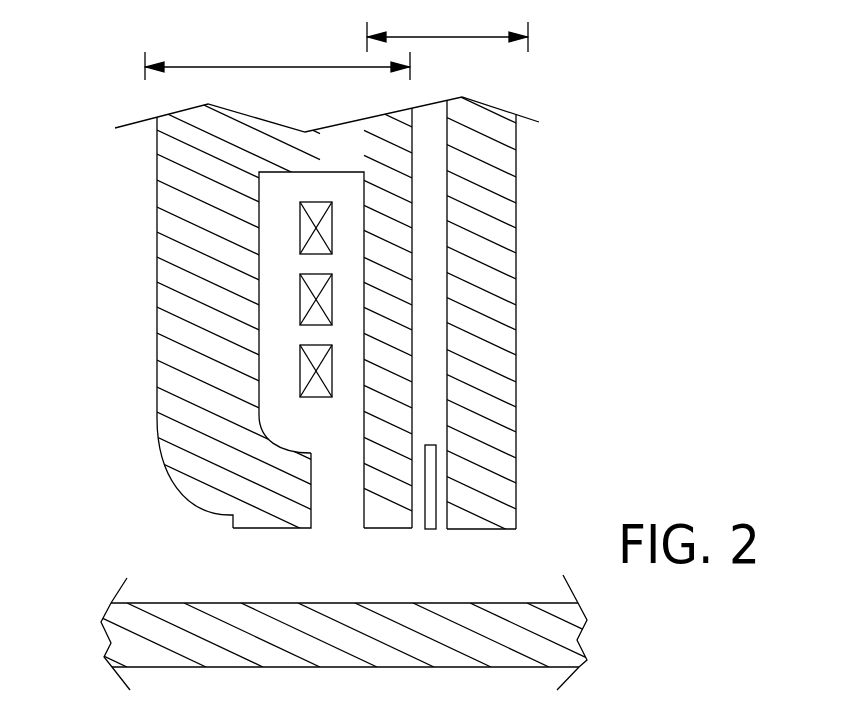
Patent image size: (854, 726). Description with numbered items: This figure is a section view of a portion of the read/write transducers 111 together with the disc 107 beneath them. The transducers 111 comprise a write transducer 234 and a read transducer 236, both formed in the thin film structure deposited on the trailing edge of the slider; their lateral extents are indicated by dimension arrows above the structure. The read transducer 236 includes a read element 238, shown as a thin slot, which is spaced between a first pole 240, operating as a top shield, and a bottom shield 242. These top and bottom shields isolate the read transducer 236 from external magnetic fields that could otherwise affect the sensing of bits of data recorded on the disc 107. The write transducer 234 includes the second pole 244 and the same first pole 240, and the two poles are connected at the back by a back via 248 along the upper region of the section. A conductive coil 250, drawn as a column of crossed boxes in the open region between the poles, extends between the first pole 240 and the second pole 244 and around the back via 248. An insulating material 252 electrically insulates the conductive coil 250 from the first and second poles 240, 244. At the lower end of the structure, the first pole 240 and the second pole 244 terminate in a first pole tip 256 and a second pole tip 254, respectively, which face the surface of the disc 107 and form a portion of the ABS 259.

The disc 107 is at (108, 610).
The read/write transducers 111 is at (666, 109).
The write transducer 234 is at (243, 66).
The read transducer 236 is at (458, 36).
The read element 238 is at (431, 529).
The first pole 240 is at (376, 380).
The bottom shield 242 is at (503, 335).
The second pole 244 is at (170, 324).
The back via 248 is at (320, 138).
The conductive coil 250 is at (305, 228).
The insulating material 252 is at (290, 296).
The second pole tip 254 is at (233, 526).
The first pole tip 256 is at (373, 532).
The ABS 259 is at (502, 532).